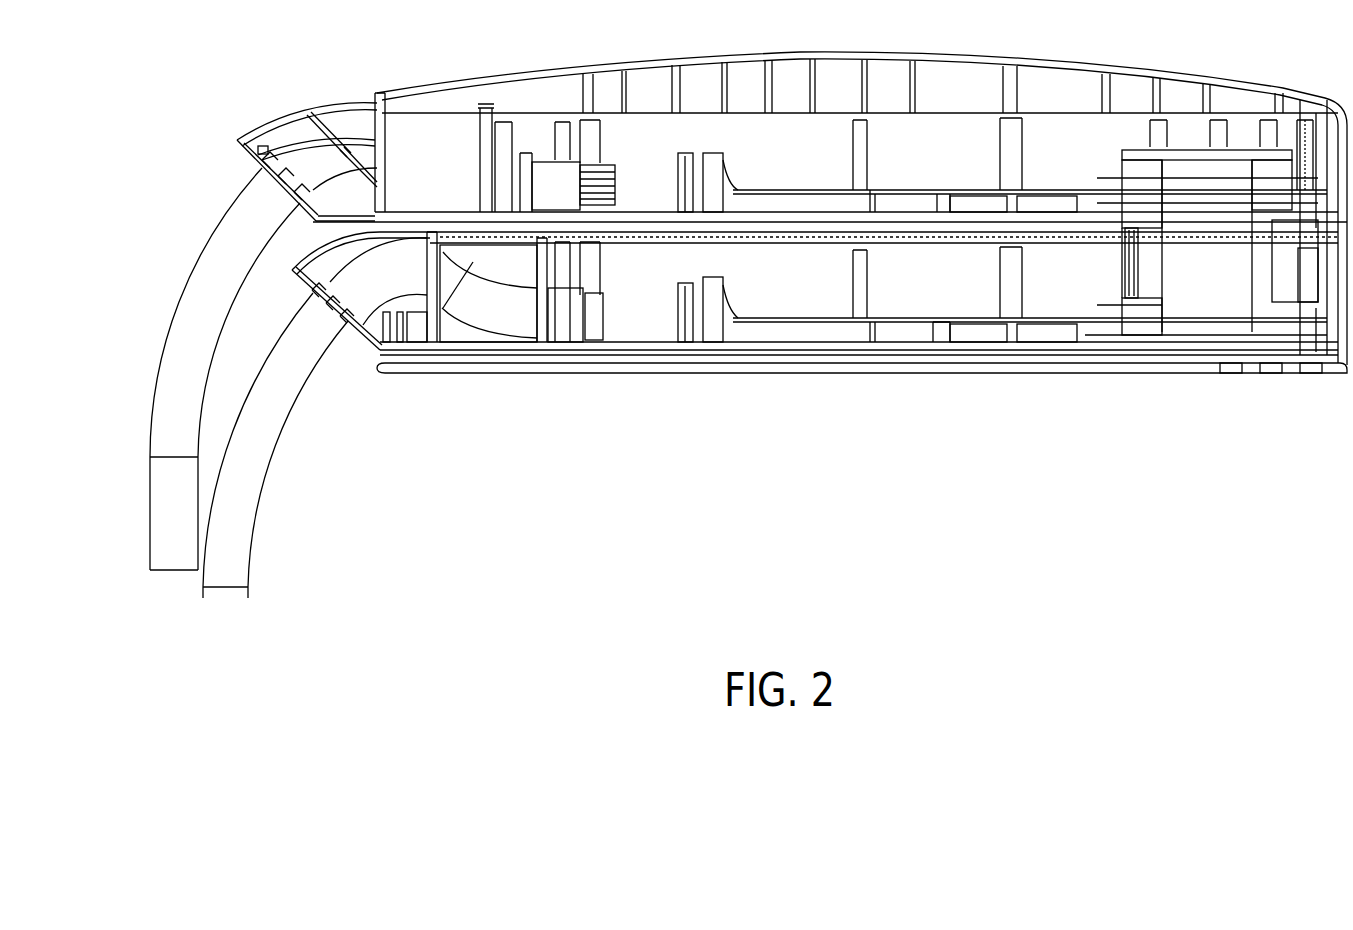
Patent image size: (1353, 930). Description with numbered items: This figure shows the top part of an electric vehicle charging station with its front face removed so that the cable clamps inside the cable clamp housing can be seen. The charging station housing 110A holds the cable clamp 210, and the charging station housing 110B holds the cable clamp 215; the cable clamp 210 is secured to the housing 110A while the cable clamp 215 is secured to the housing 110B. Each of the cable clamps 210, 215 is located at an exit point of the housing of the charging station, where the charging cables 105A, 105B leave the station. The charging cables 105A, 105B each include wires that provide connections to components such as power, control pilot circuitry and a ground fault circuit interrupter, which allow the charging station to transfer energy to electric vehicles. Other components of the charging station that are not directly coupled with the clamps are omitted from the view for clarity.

The charging station housing 110A is at (523, 102).
The charging station housing 110B is at (663, 302).
The cable clamp 210 is at (308, 143).
The cable clamp 215 is at (383, 290).
The charging cable 105A is at (202, 265).
The charging cable 105B is at (248, 468).